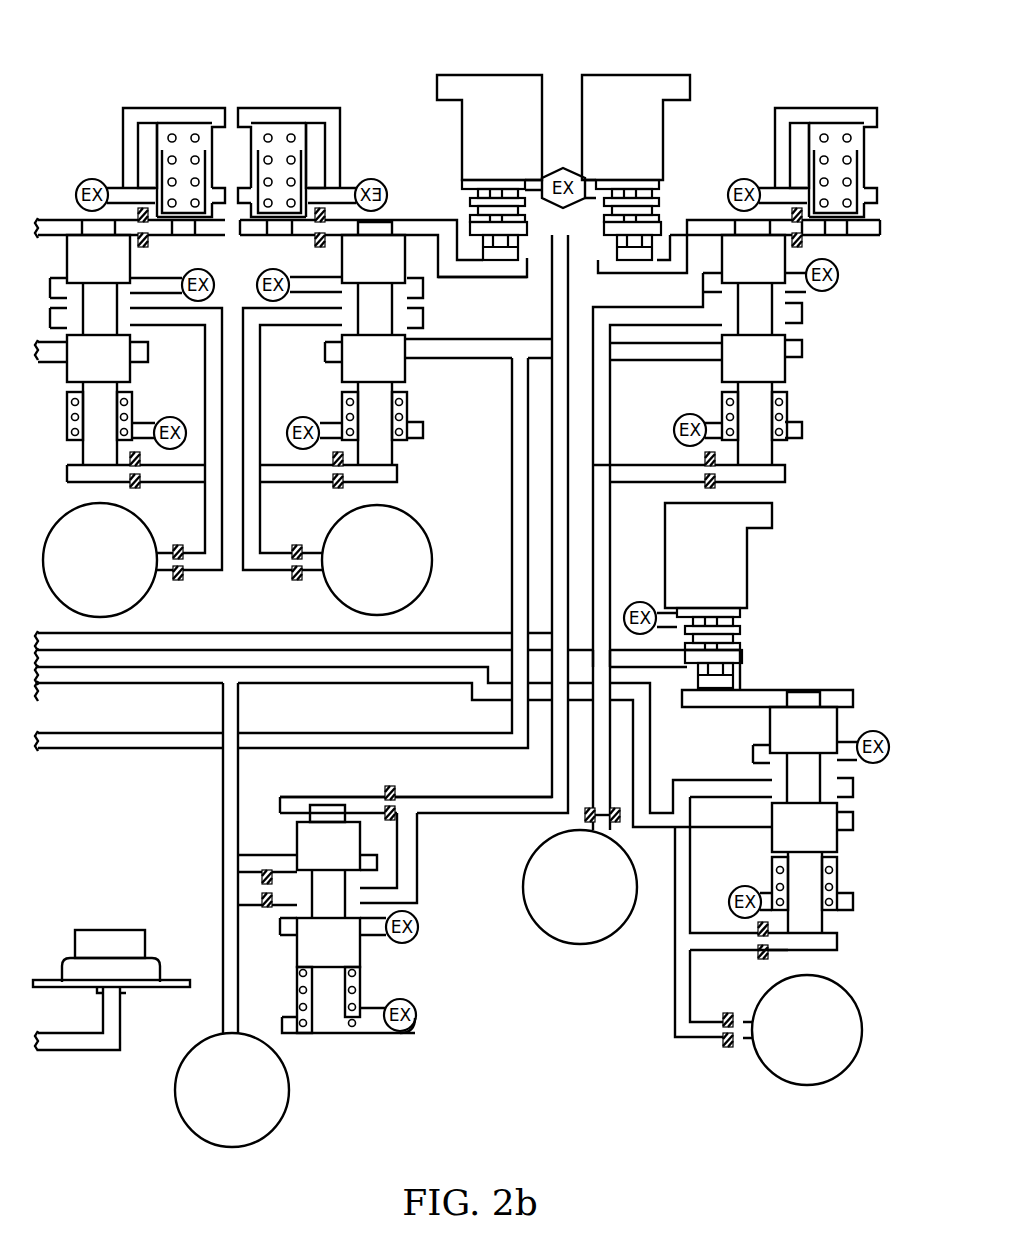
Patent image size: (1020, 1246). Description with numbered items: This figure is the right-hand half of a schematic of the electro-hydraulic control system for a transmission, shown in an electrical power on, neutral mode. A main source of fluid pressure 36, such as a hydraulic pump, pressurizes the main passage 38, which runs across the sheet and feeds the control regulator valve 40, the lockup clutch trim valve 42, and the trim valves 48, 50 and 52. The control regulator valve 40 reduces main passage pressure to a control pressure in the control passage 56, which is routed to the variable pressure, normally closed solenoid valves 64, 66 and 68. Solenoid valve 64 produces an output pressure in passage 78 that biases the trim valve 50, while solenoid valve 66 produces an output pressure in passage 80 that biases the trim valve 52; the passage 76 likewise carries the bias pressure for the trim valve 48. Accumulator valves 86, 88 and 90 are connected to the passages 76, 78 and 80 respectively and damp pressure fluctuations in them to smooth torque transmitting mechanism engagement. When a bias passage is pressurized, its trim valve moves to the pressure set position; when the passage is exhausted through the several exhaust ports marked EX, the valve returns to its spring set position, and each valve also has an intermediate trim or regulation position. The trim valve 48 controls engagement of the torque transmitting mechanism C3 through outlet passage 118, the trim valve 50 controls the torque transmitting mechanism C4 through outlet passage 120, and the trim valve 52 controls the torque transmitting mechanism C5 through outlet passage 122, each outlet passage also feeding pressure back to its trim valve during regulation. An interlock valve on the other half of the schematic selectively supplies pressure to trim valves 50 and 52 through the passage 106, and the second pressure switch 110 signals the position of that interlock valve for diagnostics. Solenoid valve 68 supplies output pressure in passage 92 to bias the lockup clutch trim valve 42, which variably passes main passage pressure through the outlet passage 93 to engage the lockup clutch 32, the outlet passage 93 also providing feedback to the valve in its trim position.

The lockup clutch 32 is at (807, 1030).
The main source of fluid pressure 36 is at (232, 1090).
The main passage 38 is at (131, 685).
The control regulator valve 40 is at (340, 1050).
The lockup clutch trim valve 42 is at (862, 919).
The trim valve 48 is at (64, 462).
The trim valve 50 is at (428, 460).
The trim valve 52 is at (798, 483).
The control passage 56 is at (554, 298).
The solenoid valve 64 is at (489, 167).
The solenoid valve 66 is at (636, 167).
The solenoid valve 68 is at (698, 595).
The passage 76 is at (62, 235).
The passage 78 is at (458, 278).
The passage 80 is at (685, 220).
The accumulator valve 86 is at (195, 108).
The accumulator valve 88 is at (280, 108).
The accumulator valve 90 is at (838, 108).
The passage 92 is at (774, 692).
The outlet passage 93 is at (692, 849).
The passage 106 is at (512, 469).
The second pressure switch 110 is at (107, 930).
The outlet passage 118 is at (205, 348).
The outlet passage 120 is at (262, 348).
The outlet passage 122 is at (606, 394).
The torque transmitting mechanism C3 is at (100, 560).
The torque transmitting mechanism C4 is at (377, 560).
The torque transmitting mechanism C5 is at (580, 876).